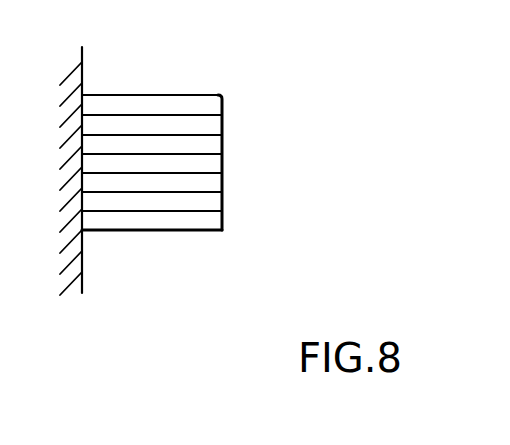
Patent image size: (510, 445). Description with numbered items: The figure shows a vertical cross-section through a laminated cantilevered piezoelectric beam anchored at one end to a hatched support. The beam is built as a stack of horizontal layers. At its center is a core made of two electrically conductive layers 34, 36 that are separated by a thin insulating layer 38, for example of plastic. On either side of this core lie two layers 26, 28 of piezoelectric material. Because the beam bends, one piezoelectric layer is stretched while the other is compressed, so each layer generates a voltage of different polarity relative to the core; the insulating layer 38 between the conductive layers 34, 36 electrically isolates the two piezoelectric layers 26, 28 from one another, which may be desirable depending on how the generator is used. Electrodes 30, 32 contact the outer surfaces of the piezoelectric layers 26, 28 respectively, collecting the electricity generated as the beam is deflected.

The piezoelectric layer 26 is at (213, 126).
The piezoelectric layer 28 is at (162, 197).
The electrode 30 is at (147, 95).
The electrode 32 is at (207, 220).
The electrically conductive layer 34 is at (208, 143).
The electrically conductive layer 36 is at (212, 182).
The insulating layer 38 is at (210, 162).